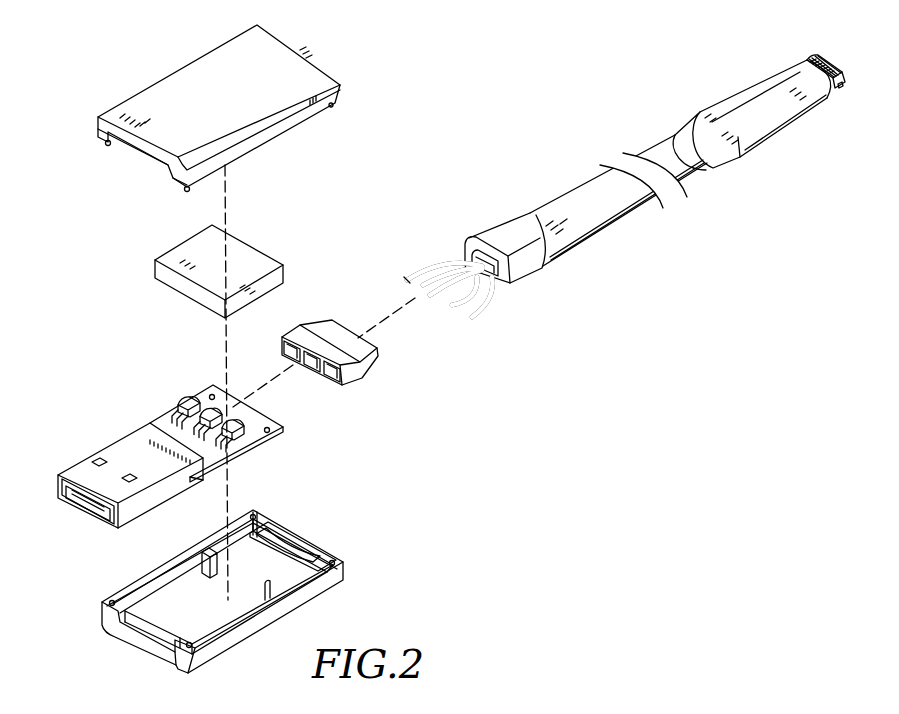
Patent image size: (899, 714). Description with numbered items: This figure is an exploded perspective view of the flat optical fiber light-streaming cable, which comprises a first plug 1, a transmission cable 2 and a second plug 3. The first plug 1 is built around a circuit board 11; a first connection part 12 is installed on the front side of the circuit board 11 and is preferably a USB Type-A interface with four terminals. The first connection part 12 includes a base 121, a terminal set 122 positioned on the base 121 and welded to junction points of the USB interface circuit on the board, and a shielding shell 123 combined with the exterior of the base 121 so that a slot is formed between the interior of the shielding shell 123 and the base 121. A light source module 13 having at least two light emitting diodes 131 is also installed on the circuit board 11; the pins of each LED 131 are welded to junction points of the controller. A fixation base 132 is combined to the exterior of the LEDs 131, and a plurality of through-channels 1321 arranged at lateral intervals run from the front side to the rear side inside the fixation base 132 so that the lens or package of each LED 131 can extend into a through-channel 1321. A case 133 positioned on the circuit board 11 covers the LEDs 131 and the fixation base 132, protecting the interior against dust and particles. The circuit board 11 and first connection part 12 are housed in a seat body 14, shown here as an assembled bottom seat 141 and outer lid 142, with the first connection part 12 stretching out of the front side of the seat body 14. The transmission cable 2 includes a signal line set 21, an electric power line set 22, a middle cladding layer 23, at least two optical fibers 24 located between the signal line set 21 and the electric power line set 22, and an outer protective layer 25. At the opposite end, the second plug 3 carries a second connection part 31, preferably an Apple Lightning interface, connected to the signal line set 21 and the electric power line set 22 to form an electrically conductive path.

The first plug 1 is at (78, 378).
The transmission cable 2 is at (575, 200).
The second plug 3 is at (728, 98).
The second connection part 31 is at (805, 55).
The circuit board 11 is at (167, 420).
The first connection part 12 is at (106, 477).
The base 121 is at (100, 524).
The terminal set 122 is at (60, 495).
The shielding shell 123 is at (125, 448).
The light source module 13 is at (182, 307).
The light emitting diodes 131 is at (190, 397).
The fixation base 132 is at (295, 326).
The through-channels 1321 is at (332, 381).
The case 133 is at (240, 243).
The seat body 14 is at (194, 591).
The bottom seat 141 is at (120, 591).
The outer lid 142 is at (103, 125).
The signal line set 21 is at (427, 280).
The electric power line set 22 is at (473, 318).
The middle cladding layer 23 is at (487, 308).
The optical fibers 24 is at (448, 282).
The outer protective layer 25 is at (487, 262).